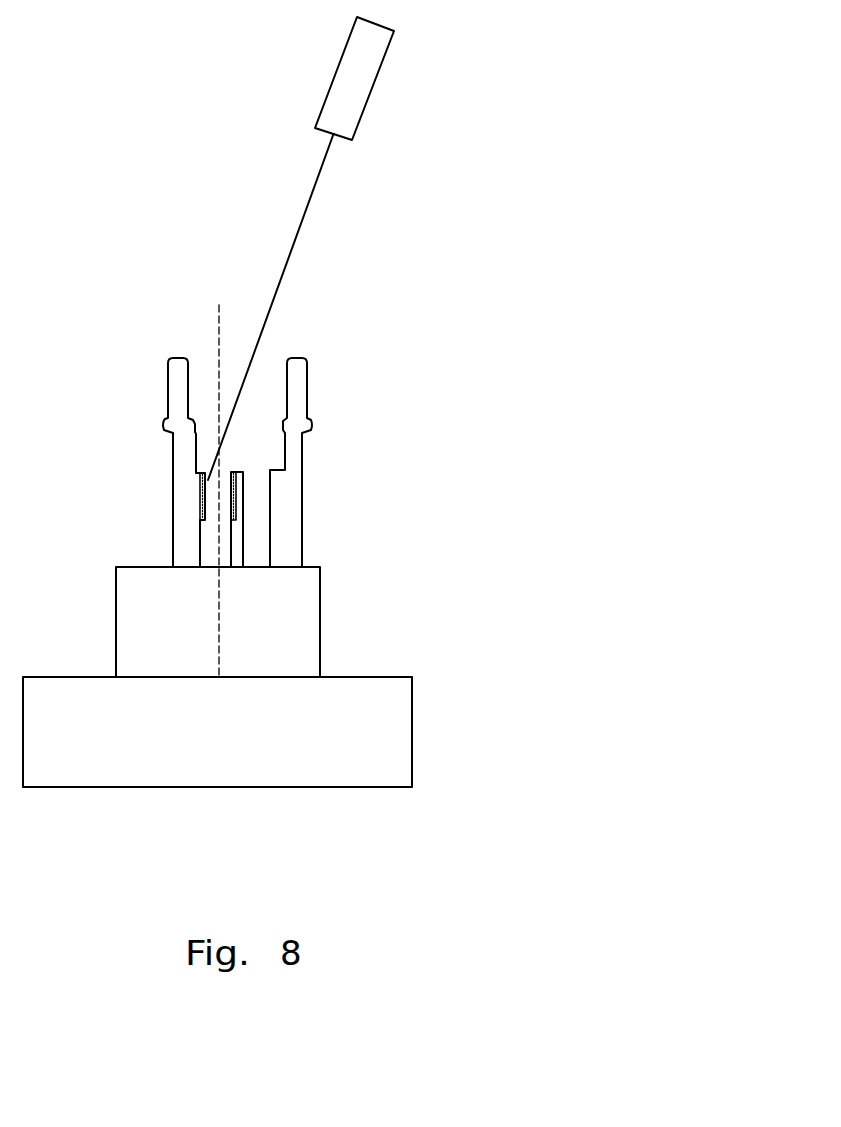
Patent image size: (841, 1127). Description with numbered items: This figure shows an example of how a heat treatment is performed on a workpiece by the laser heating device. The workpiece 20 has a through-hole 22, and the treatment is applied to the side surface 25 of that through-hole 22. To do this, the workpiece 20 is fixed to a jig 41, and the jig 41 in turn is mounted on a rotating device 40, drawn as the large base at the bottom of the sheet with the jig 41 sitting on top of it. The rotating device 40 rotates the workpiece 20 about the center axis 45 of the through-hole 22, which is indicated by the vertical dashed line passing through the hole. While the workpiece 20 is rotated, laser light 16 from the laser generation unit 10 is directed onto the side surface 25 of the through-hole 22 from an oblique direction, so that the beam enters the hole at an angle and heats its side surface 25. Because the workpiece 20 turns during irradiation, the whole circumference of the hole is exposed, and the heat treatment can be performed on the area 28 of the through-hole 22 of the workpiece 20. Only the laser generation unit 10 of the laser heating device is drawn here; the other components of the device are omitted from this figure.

The laser generation unit 10 is at (372, 87).
The laser light 16 is at (287, 270).
The workpiece 20 is at (267, 427).
The through-hole 22 is at (227, 460).
The side surface 25 is at (180, 533).
The area 28 is at (203, 498).
The rotating device 40 is at (412, 715).
The jig 41 is at (320, 618).
The center axis 45 is at (218, 332).